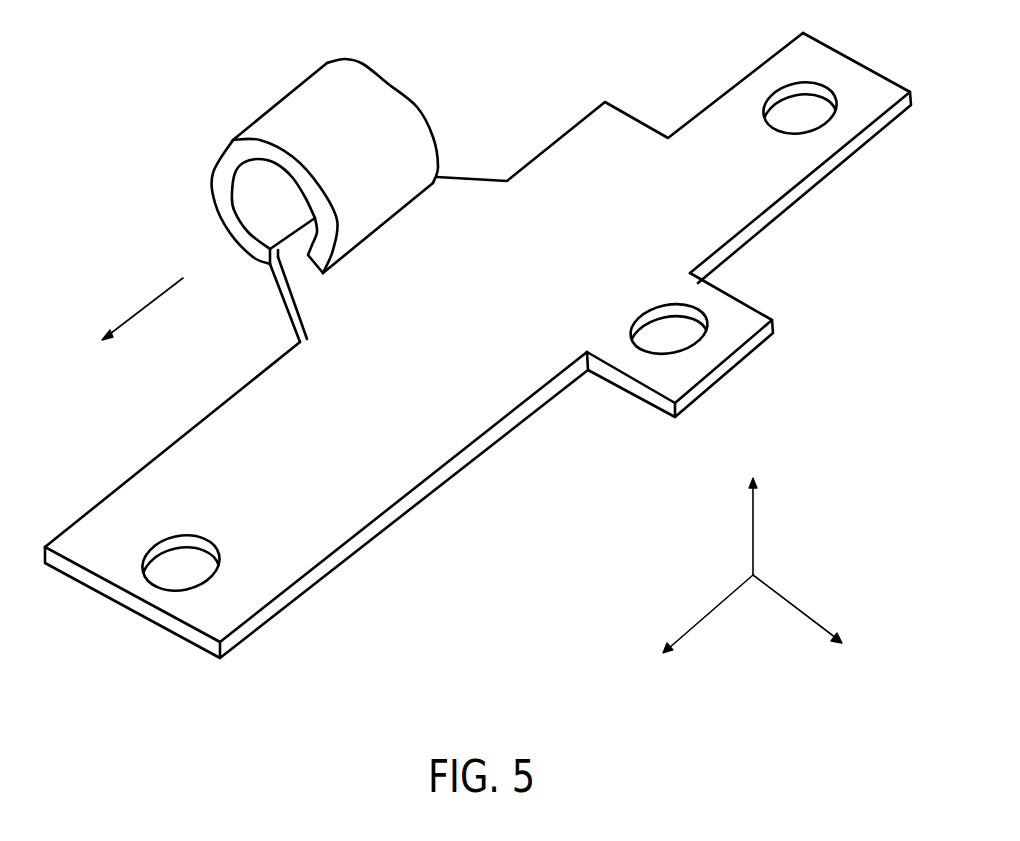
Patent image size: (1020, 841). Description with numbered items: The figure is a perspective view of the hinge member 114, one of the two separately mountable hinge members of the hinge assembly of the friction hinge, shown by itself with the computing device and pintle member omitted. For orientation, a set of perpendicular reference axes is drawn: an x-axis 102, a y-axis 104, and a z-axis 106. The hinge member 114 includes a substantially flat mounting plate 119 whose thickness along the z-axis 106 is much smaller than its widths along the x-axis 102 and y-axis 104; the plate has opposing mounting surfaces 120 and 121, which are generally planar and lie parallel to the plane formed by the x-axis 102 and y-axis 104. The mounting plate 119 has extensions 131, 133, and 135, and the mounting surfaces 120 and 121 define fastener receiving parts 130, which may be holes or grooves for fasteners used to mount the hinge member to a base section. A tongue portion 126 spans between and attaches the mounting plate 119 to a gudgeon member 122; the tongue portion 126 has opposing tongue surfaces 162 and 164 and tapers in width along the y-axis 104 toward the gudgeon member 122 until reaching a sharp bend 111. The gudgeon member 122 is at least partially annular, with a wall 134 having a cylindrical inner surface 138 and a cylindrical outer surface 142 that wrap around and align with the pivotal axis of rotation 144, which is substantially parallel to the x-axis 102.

The x-axis 102 is at (703, 616).
The y-axis 104 is at (800, 612).
The z-axis 106 is at (755, 510).
The sharp bend 111 is at (265, 270).
The hinge member 114 is at (150, 432).
The mounting plate 119 is at (355, 432).
The mounting surface 120 is at (478, 342).
The mounting surface 121 is at (497, 440).
The gudgeon member 122 is at (285, 96).
The tongue portion 126 is at (318, 297).
The fastener receiving part 130 is at (193, 547).
The extension 131 is at (843, 88).
The extension 133 is at (102, 538).
The wall 134 is at (249, 128).
The extension 135 is at (733, 325).
The cylindrical inner surface 138 is at (247, 197).
The cylindrical outer surface 142 is at (318, 125).
The pivotal axis of rotation 144 is at (147, 306).
The tongue surface 162 is at (372, 250).
The tongue surface 164 is at (278, 306).